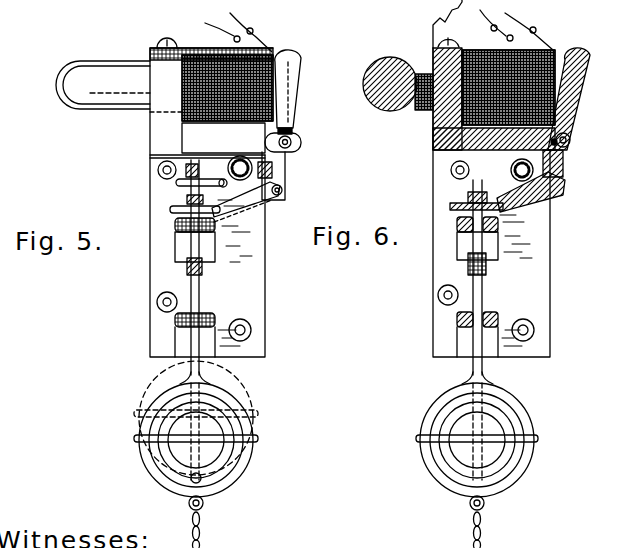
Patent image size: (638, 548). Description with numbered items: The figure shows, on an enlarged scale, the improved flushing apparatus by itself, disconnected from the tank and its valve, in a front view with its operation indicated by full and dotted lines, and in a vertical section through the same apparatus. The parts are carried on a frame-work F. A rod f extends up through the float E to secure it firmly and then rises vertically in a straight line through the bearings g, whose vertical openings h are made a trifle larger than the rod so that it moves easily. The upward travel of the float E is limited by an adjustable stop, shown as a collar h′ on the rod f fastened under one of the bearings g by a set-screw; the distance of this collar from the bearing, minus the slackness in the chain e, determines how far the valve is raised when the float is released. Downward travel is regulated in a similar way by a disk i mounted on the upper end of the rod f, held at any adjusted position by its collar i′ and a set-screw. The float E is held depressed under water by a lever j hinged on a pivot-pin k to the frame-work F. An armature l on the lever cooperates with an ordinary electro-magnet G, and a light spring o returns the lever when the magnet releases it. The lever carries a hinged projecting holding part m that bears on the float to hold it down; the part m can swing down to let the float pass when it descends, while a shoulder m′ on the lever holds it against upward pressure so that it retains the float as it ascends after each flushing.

In FIG. 5, the frame-work F is at (150, 48).
In FIG. 6, the frame-work F is at (434, 50).
In FIG. 5, the frame plate F′ is at (262, 262).
In FIG. 5, the electro-magnet G is at (185, 110).
In FIG. 6, the electro-magnet G is at (462, 113).
In FIG. 5, the armature l is at (302, 93).
In FIG. 6, the armature l is at (588, 95).
In FIG. 5, the pivot-pin k is at (300, 142).
In FIG. 6, the pivot-pin k is at (572, 141).
In FIG. 5, the lever j is at (290, 160).
In FIG. 6, the lever j is at (568, 160).
In FIG. 5, the projecting part m is at (255, 200).
In FIG. 6, the projecting part m is at (540, 203).
In FIG. 5, the shoulder m′ is at (270, 173).
In FIG. 6, the shoulder m′ is at (563, 172).
In FIG. 5, the spring o is at (240, 175).
In FIG. 6, the spring o is at (516, 175).
In FIG. 5, the disk i is at (170, 210).
In FIG. 6, the disk i is at (450, 207).
In FIG. 5, the collar i′ is at (186, 197).
In FIG. 6, the collar i′ is at (468, 196).
In FIG. 5, the bearings g is at (175, 243).
In FIG. 6, the bearings g is at (503, 250).
In FIG. 6, the vertical openings h is at (465, 232).
In FIG. 5, the collar h′ is at (202, 268).
In FIG. 6, the collar h′ is at (468, 272).
In FIG. 5, the rod f is at (202, 267).
In FIG. 6, the rod f is at (484, 282).
In FIG. 5, the float E is at (253, 440).
In FIG. 6, the float E is at (452, 162).
In FIG. 5, the chain e is at (201, 522).
In FIG. 6, the chain e is at (483, 522).